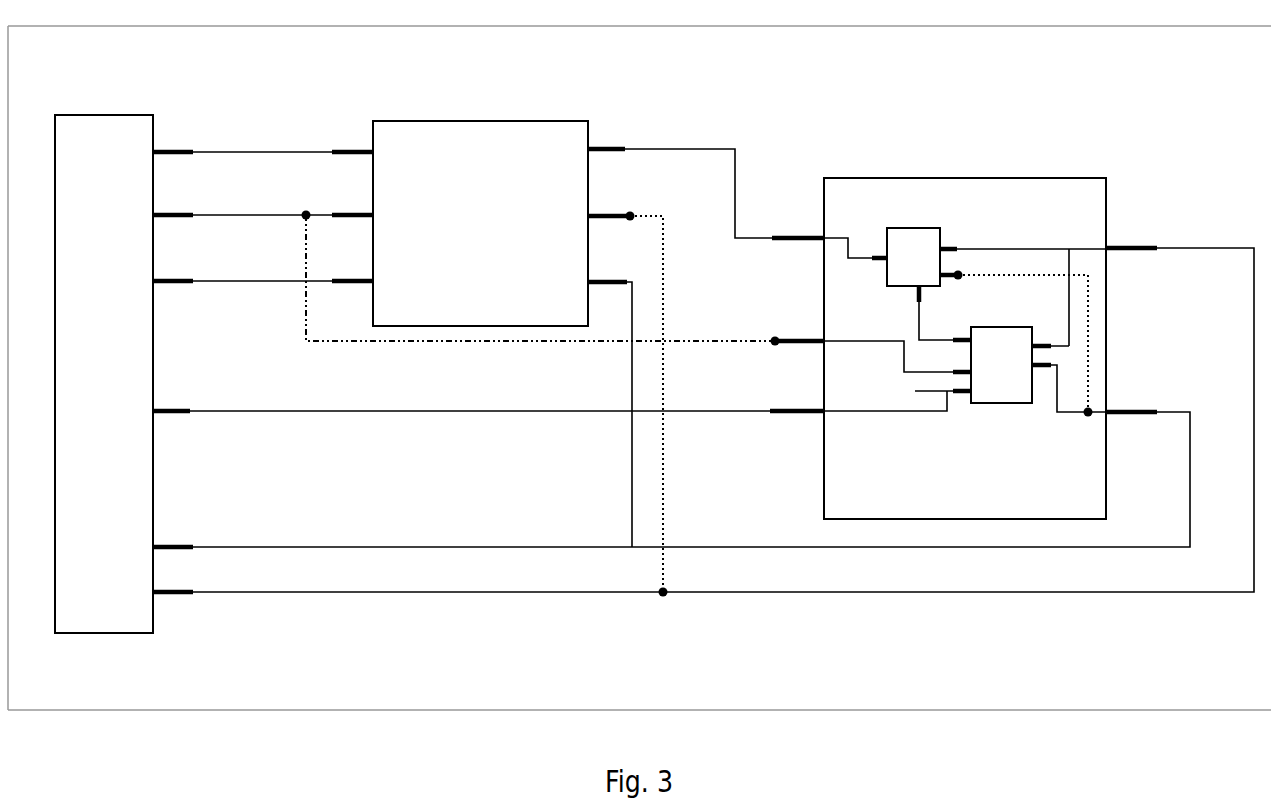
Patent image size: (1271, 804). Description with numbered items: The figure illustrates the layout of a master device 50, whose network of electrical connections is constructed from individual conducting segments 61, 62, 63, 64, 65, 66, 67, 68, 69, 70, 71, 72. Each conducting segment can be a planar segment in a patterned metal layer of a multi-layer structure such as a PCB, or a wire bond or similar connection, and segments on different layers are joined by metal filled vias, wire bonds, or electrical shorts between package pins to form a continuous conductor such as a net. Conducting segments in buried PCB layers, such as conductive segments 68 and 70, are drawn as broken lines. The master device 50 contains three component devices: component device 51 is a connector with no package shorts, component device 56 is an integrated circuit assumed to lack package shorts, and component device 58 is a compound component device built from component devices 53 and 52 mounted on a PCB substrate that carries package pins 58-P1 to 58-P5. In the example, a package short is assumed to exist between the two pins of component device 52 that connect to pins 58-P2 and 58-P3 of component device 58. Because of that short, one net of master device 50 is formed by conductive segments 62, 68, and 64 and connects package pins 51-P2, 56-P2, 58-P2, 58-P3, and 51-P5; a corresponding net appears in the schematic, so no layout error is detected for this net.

The master device 50 is at (277, 708).
The component device 51 is at (107, 114).
The component device 52 is at (988, 370).
The component device 53 is at (900, 269).
The component device 56 is at (470, 121).
The component device 58 is at (957, 178).
The conducting segment 61 is at (262, 150).
The conducting segment 62 is at (265, 214).
The conducting segment 63 is at (232, 283).
The conducting segment 64 is at (212, 408).
The conducting segment 65 is at (268, 545).
The conducting segment 66 is at (237, 594).
The conducting segment 67 is at (690, 149).
The conducting segment 68 is at (755, 338).
The conducting segment 69 is at (633, 470).
The conducting segment 70 is at (663, 470).
The conducting segment 71 is at (1192, 247).
The conducting segment 72 is at (1180, 411).